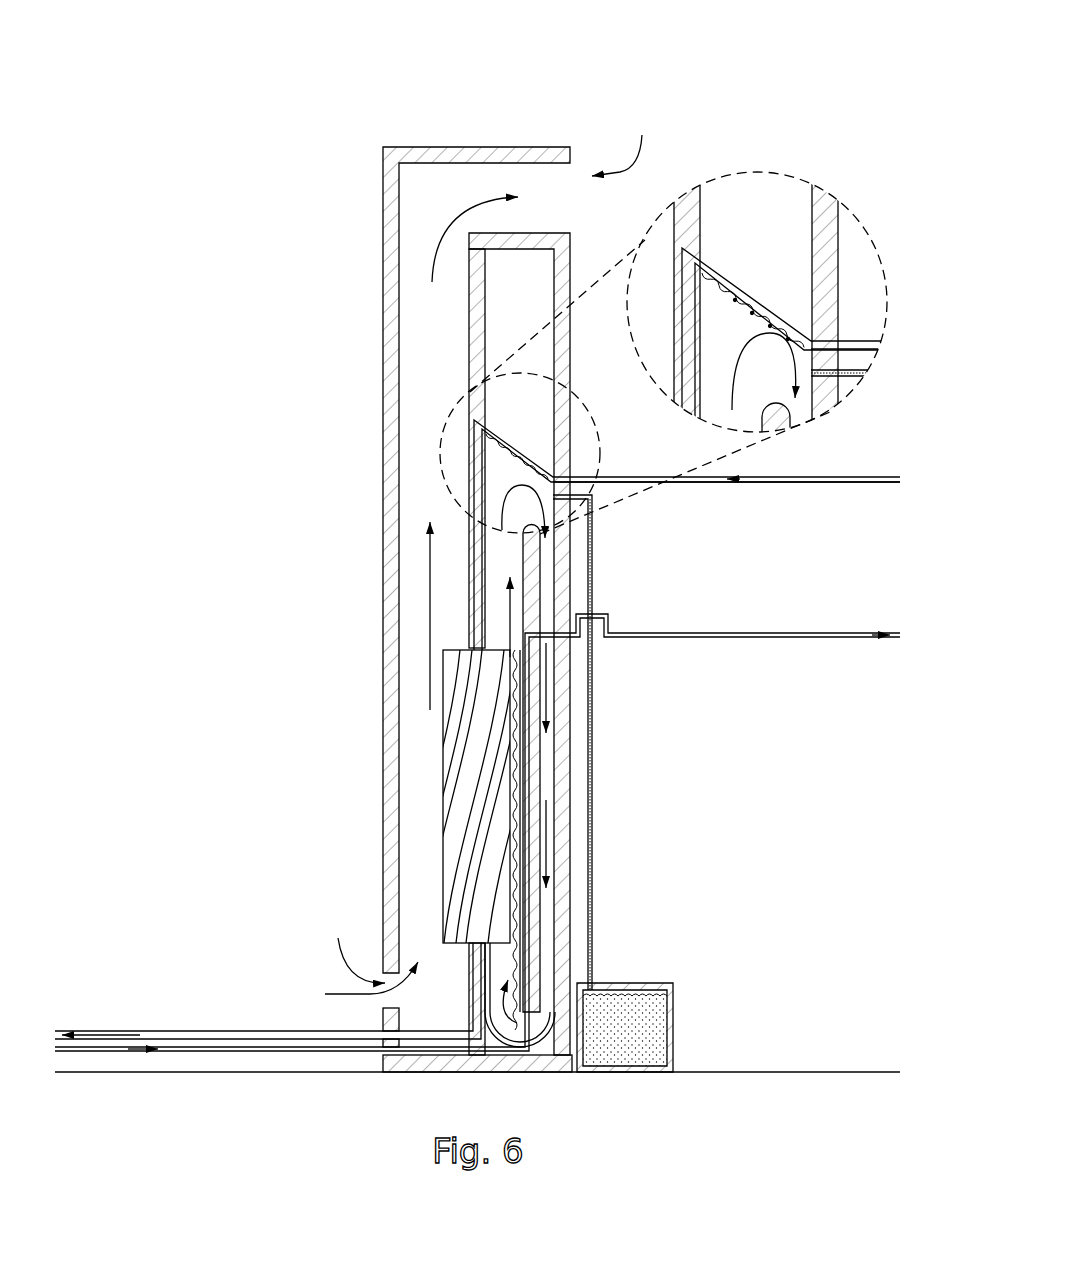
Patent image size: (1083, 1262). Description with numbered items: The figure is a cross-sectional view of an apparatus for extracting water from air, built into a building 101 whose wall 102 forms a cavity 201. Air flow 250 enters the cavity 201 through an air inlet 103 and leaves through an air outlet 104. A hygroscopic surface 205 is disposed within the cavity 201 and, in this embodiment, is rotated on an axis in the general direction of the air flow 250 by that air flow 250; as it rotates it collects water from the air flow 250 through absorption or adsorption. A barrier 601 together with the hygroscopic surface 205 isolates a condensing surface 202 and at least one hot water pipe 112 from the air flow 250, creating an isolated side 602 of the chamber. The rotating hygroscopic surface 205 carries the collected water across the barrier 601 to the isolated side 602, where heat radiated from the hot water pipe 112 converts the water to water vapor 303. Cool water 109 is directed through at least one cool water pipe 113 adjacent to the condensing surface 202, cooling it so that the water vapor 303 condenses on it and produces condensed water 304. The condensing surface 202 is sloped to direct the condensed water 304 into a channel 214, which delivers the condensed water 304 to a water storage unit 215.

The building 101 is at (693, 52).
The wall 102 is at (383, 410).
The air inlet 103 is at (330, 975).
The air outlet 104 is at (118, 1093).
The cool water 109 is at (818, 484).
The hot water pipe 112 is at (697, 632).
The cool water pipe 113 is at (690, 484).
The cavity 201 is at (408, 762).
The condensing surface 202 is at (517, 456).
The hygroscopic surface 205 is at (443, 848).
The channel 214 is at (594, 848).
The water storage unit 215 is at (652, 984).
The air flow 250 is at (430, 612).
The water vapor 303 is at (523, 748).
The condensed water 304 is at (645, 1043).
The barrier 601 is at (469, 352).
The isolated side 602 is at (485, 297).